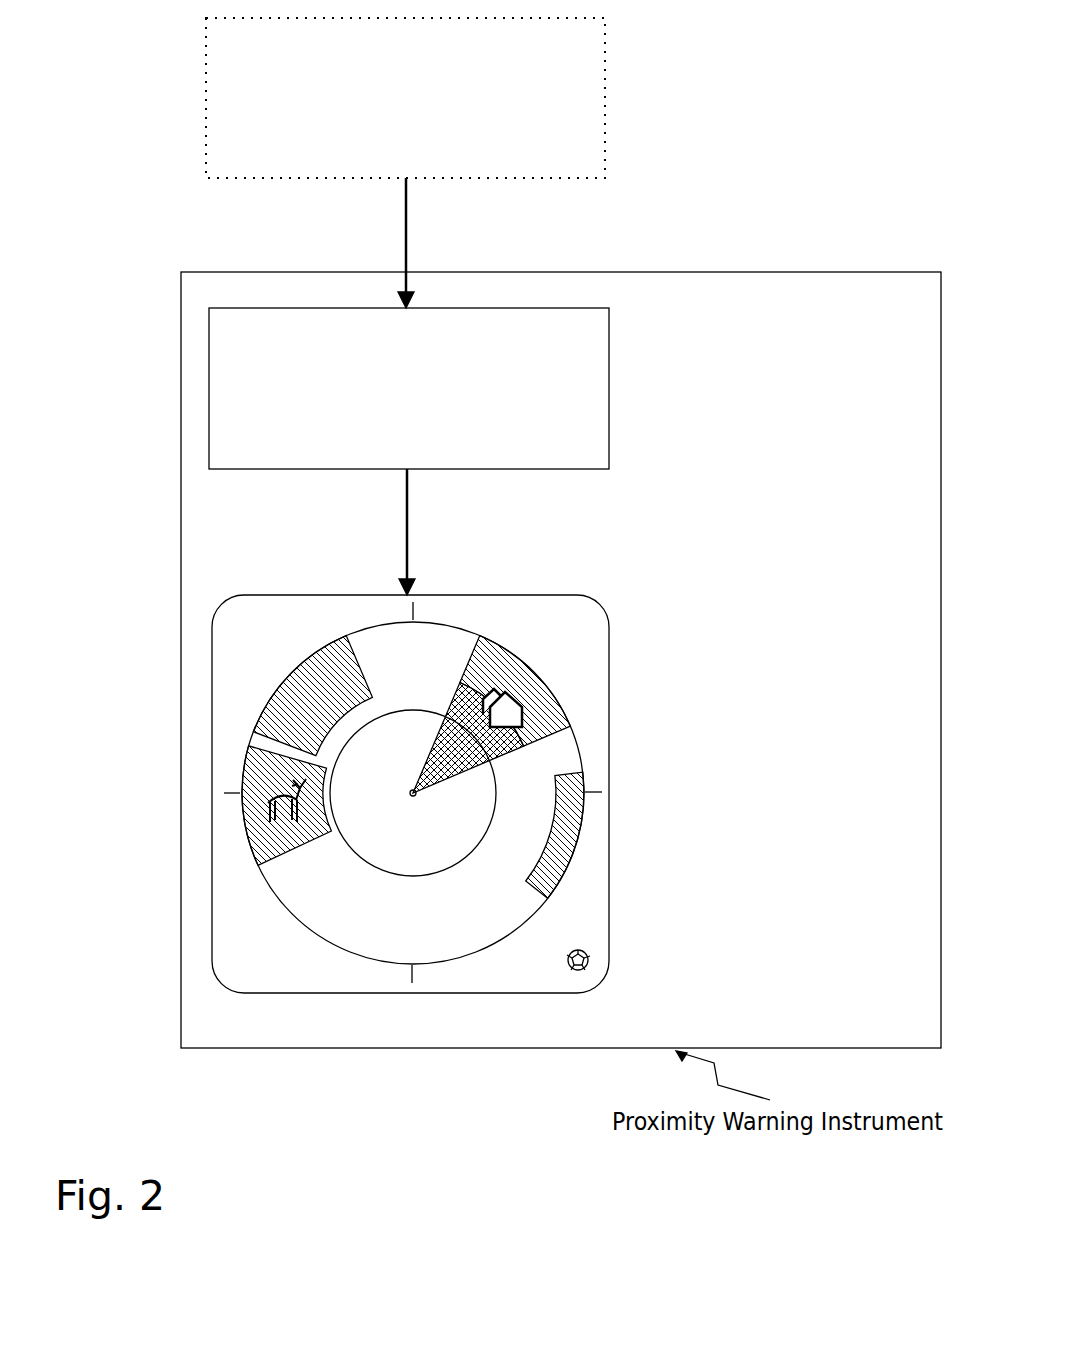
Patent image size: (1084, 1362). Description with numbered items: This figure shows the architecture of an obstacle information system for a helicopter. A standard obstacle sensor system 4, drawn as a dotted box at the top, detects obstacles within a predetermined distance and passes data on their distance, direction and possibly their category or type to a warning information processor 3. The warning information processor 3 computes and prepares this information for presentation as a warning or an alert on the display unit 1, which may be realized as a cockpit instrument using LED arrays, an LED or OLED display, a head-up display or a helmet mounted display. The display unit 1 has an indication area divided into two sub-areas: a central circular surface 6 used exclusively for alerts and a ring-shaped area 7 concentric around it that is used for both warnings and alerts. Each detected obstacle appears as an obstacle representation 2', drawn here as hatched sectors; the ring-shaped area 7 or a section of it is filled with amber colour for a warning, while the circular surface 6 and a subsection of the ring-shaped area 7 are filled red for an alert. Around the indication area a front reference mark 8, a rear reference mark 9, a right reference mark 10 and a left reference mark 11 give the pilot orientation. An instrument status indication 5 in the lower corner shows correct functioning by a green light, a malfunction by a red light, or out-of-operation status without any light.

The display unit 1 is at (467, 794).
The representation of an obstacle 2' is at (397, 726).
The warning information processor 3 is at (409, 388).
The obstacle sensor system 4 is at (405, 98).
The instrument status indication 5 is at (625, 946).
The central circular surface 6 is at (307, 878).
The ring-shaped area 7 is at (434, 824).
The front reference mark 8 is at (462, 591).
The rear reference mark 9 is at (453, 1033).
The right reference mark 10 is at (645, 813).
The left reference mark 11 is at (183, 825).